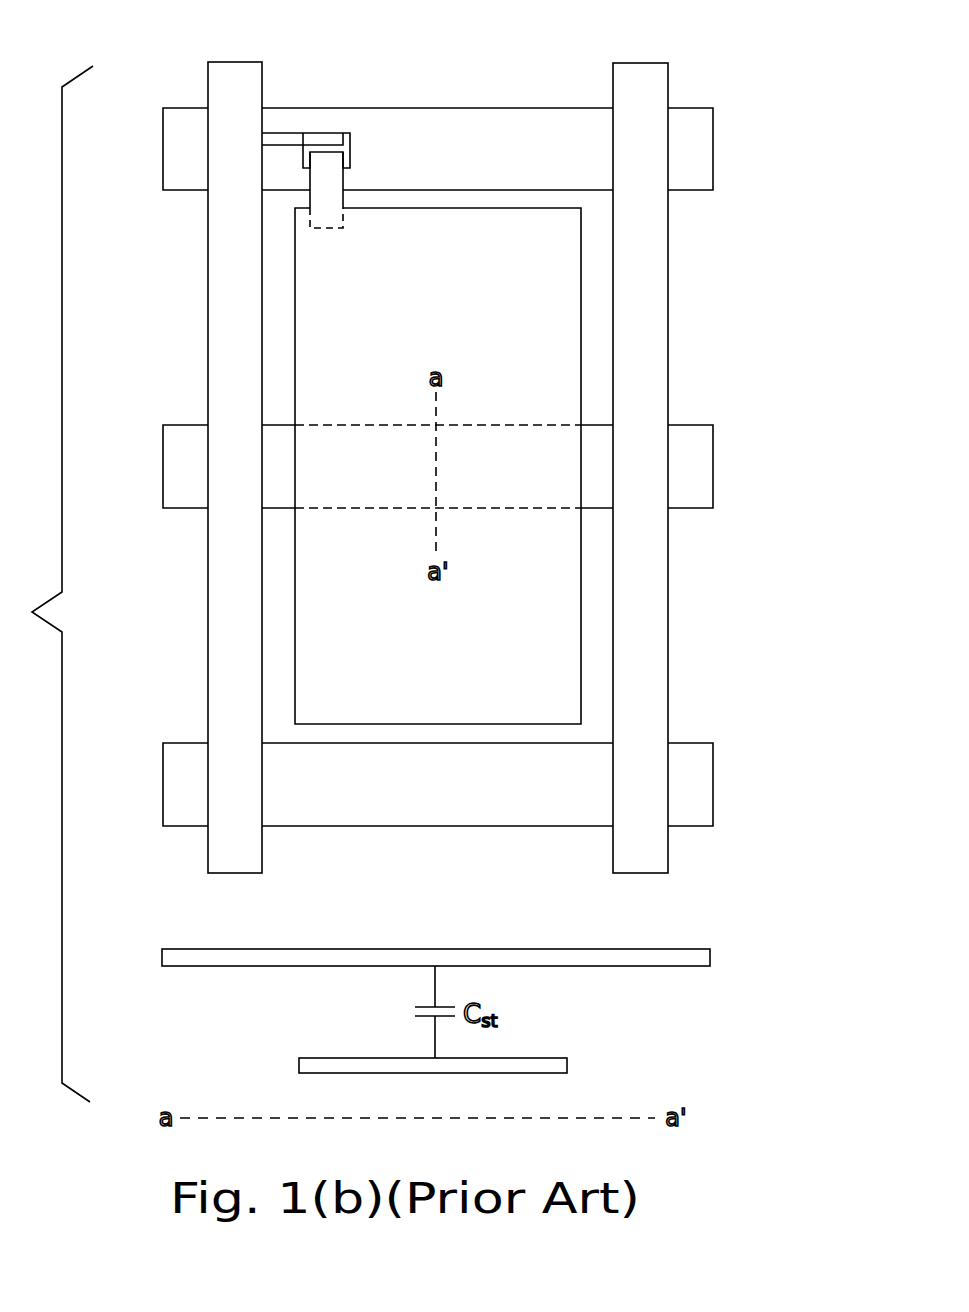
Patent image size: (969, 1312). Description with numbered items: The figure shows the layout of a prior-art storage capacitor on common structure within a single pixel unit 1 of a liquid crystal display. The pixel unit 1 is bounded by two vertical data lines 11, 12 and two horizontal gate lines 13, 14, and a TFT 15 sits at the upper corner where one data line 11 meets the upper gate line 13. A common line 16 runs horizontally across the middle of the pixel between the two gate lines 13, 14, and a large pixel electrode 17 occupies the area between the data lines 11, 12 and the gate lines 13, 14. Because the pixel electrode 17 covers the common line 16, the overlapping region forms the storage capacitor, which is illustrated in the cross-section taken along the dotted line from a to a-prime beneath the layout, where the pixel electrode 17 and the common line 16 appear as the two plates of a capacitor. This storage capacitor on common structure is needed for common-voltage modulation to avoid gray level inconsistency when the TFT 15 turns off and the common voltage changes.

The pixel unit 1 is at (110, 646).
The data line 11 is at (235, 80).
The data line 12 is at (640, 83).
The gate line 13 is at (185, 153).
The gate line 14 is at (185, 788).
The TFT 15 is at (331, 82).
The common line 16 is at (185, 470).
The pixel electrode 17 is at (295, 627).